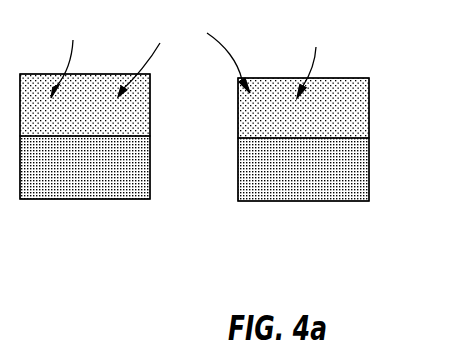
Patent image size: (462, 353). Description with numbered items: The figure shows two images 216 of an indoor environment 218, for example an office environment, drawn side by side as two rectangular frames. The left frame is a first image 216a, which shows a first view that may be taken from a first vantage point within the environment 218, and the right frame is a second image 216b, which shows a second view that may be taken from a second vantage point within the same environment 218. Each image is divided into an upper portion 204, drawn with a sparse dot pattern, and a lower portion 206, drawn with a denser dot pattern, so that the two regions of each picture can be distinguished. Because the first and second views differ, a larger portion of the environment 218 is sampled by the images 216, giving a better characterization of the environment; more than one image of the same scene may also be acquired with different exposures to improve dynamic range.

The upper portion 204 is at (135, 106).
The lower portion 206 is at (137, 173).
The images 216 is at (184, 56).
The first image 216a is at (127, 194).
The second image 216b is at (252, 186).
The indoor environment 218 is at (190, 58).